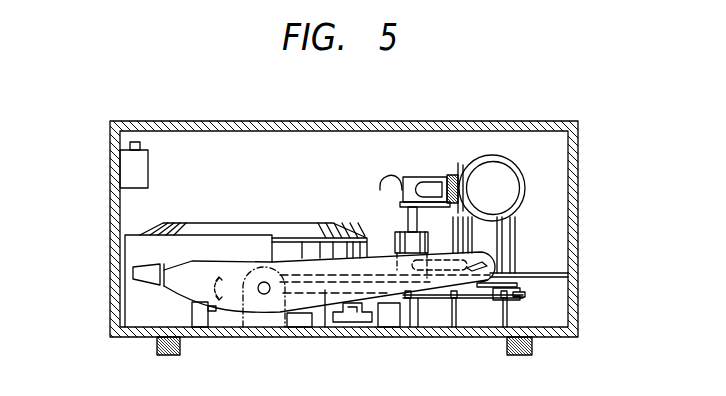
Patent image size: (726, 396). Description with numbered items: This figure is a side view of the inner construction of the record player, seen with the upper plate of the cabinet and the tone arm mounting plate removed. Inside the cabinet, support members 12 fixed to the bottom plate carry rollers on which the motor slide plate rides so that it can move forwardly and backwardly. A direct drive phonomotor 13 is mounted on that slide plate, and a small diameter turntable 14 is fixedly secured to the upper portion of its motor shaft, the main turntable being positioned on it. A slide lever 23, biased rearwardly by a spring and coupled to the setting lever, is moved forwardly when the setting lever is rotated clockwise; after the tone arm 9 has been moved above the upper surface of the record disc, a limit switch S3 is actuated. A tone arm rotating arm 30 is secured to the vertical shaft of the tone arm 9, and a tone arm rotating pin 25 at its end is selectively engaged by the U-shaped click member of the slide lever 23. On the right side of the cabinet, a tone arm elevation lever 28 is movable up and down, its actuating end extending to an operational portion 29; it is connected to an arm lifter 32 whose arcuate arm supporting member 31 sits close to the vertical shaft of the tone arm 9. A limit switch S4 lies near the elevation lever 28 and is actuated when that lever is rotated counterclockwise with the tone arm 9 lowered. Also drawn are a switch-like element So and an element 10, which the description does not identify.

The light sensor So is at (130, 146).
The support member 12 is at (135, 247).
The small diameter turntable 14 is at (293, 232).
The phonomotor 13 is at (320, 238).
The arm lifter 32 is at (395, 236).
The tone arm 9 is at (462, 180).
The arcuate arm supporting member 31 is at (437, 177).
The shelf 10 is at (545, 277).
The operational portion 29 is at (133, 273).
The limit switch S4 is at (198, 320).
The limit switch S3 is at (301, 323).
The tone arm elevation lever 28 is at (331, 330).
The slide lever 23 is at (434, 300).
The tone arm rotating arm 30 is at (495, 288).
The tone arm rotating pin 25 is at (517, 300).